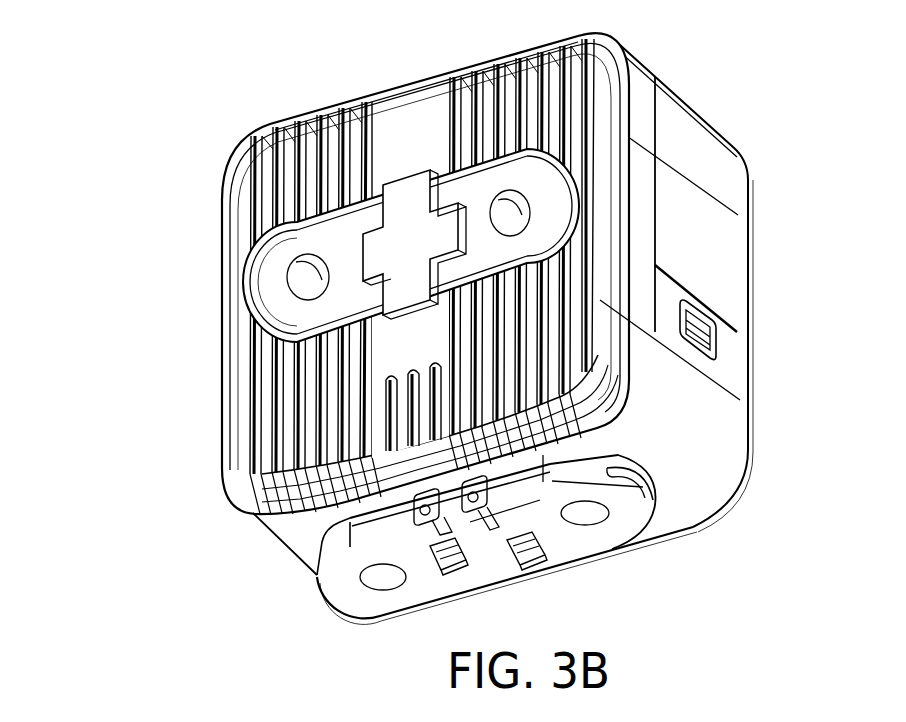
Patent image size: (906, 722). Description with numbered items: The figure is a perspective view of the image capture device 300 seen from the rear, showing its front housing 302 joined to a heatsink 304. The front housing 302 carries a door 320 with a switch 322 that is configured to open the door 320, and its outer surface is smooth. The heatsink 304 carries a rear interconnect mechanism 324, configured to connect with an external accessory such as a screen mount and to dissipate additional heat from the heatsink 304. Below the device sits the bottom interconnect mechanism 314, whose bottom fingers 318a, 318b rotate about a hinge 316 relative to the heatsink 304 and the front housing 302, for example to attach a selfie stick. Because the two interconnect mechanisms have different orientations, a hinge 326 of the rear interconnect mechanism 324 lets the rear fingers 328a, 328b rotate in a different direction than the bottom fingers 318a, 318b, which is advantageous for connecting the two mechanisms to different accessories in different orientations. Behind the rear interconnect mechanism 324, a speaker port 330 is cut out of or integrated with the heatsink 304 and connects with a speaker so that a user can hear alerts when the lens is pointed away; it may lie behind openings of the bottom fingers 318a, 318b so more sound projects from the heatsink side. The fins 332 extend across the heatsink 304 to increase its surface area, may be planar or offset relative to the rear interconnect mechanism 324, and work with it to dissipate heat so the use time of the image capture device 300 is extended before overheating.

The image capture device 300 is at (135, 128).
The front housing 302 is at (716, 116).
The heatsink 304 is at (218, 184).
The bottom interconnect mechanism 314 is at (658, 488).
The hinge 316 is at (513, 560).
The bottom finger 318a is at (331, 598).
The bottom finger 318b is at (648, 515).
The door 320 is at (710, 252).
The switch 322 is at (714, 342).
The rear interconnect mechanism 324 is at (243, 305).
The hinge 326 is at (410, 210).
The rear finger 328a is at (248, 292).
The rear finger 328b is at (540, 42).
The speaker port 330 is at (305, 277).
The fins 332 is at (275, 186).